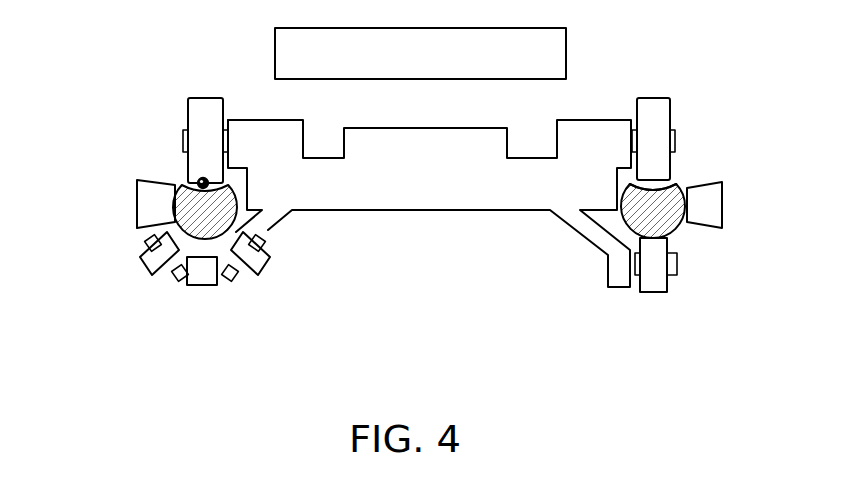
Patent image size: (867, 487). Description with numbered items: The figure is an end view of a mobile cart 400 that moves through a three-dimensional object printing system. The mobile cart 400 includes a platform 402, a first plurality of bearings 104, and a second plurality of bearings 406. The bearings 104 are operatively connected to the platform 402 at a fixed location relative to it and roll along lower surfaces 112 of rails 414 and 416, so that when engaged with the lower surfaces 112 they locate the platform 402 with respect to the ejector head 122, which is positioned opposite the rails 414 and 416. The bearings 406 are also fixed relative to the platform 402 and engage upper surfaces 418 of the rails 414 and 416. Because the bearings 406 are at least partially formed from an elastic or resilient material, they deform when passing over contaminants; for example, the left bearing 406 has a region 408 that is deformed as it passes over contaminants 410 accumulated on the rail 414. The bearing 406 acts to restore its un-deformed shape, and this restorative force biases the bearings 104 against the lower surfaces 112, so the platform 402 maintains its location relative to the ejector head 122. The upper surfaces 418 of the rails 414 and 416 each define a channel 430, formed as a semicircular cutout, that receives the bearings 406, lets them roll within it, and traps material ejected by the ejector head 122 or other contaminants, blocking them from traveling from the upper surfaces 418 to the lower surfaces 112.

The ejector head 122 is at (275, 50).
The mobile cart 400 is at (466, 300).
The platform 402 is at (320, 157).
The second plurality of bearings 406 is at (207, 115).
The region 408 is at (180, 152).
The contaminants 410 is at (249, 215).
The rail 414 is at (186, 185).
The rail 416 is at (680, 184).
The upper surfaces 418 is at (142, 158).
The channel 430 is at (168, 196).
The first plurality of bearings 104 is at (163, 262).
The lower surfaces 112 is at (133, 237).